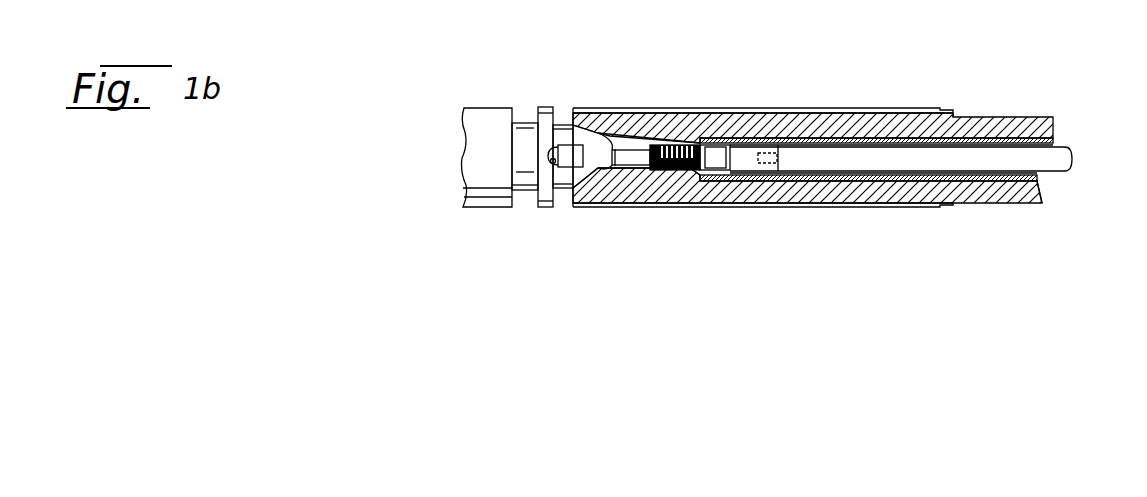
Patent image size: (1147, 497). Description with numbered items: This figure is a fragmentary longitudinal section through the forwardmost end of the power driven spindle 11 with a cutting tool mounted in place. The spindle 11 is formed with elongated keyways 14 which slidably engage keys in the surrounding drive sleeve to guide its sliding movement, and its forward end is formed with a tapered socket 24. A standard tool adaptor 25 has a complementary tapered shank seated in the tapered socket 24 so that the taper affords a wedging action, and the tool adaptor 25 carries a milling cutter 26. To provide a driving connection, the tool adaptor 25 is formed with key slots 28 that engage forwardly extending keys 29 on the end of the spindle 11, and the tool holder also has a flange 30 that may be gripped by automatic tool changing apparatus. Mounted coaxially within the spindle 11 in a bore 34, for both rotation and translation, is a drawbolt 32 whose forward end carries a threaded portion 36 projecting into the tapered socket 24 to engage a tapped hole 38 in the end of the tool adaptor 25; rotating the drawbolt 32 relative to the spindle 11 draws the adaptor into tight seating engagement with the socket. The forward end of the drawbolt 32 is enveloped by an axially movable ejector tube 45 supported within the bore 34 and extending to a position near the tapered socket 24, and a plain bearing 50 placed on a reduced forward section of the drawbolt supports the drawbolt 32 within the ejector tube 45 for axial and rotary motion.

The milling cutter 26 is at (465, 132).
The flange 30 is at (546, 107).
The key slots 28 is at (554, 160).
The keys 29 is at (573, 152).
The keyways 14 is at (862, 112).
The spindle 11 is at (993, 117).
The bore 34 is at (900, 166).
The tapered socket 24 is at (626, 135).
The tool adaptor 25 is at (594, 182).
The tapped hole 38 is at (644, 167).
The threaded portion 36 is at (686, 170).
The plain bearing 50 is at (713, 144).
The drawbolt 32 is at (1053, 152).
The ejector tube 45 is at (1045, 178).